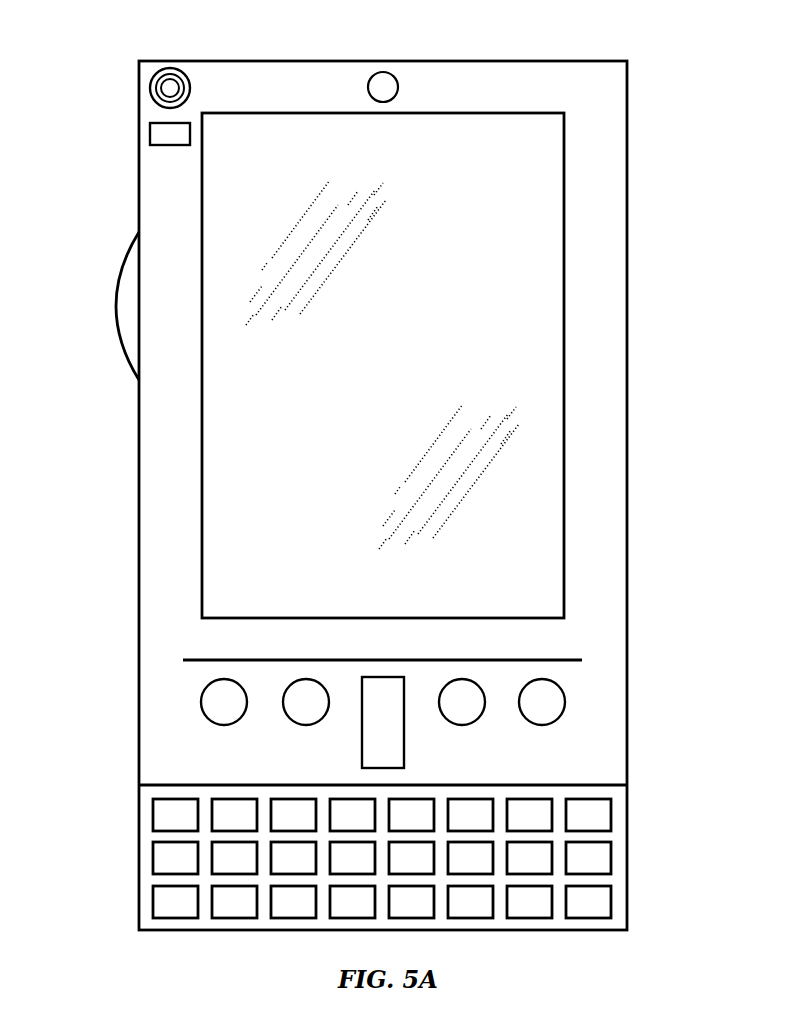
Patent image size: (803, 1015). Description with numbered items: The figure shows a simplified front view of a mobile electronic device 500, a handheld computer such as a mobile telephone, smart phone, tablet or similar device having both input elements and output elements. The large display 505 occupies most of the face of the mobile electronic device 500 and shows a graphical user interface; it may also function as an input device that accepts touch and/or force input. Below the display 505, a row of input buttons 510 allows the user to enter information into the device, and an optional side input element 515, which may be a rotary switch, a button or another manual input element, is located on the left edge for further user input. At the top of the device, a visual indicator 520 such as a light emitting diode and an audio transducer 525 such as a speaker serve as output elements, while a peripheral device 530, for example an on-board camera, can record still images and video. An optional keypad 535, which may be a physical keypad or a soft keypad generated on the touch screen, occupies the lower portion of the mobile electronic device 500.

The mobile electronic device 500 is at (628, 154).
The display 505 is at (235, 492).
The input buttons 510 is at (362, 748).
The side input element 515 is at (115, 306).
The visual indicator 520 is at (150, 135).
The audio transducer 525 is at (149, 88).
The peripheral device 530 is at (382, 72).
The keypad 535 is at (146, 865).